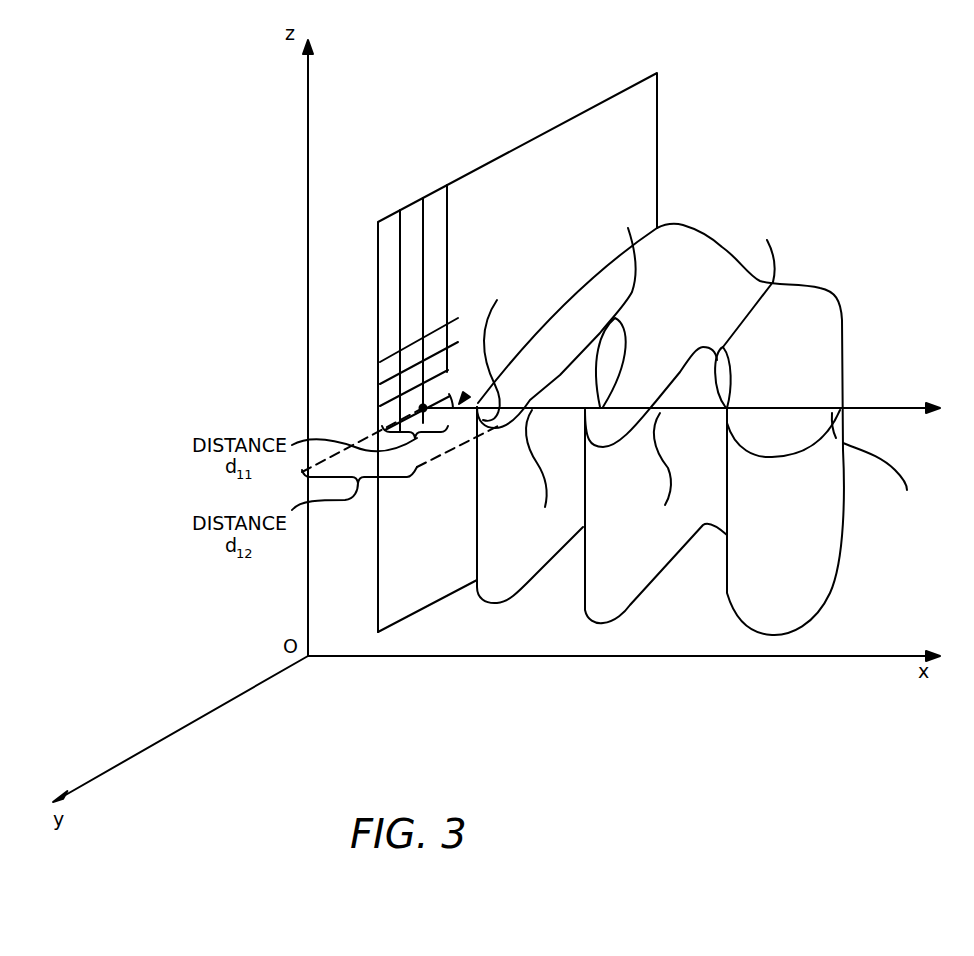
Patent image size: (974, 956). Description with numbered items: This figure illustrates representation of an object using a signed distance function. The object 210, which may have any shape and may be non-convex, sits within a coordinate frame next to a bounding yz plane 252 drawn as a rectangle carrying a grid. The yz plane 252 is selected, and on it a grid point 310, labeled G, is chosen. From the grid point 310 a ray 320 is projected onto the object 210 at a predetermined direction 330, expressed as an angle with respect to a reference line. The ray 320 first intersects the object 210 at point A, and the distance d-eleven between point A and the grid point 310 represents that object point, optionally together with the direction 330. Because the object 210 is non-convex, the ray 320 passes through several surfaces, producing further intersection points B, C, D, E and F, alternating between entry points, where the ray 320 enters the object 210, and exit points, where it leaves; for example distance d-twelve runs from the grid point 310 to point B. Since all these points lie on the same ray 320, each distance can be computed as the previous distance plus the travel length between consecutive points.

The object 210 is at (838, 298).
The yz plane 252 is at (657, 123).
The grid point 310 is at (423, 408).
The ray 320 is at (913, 408).
The direction 330 is at (464, 401).